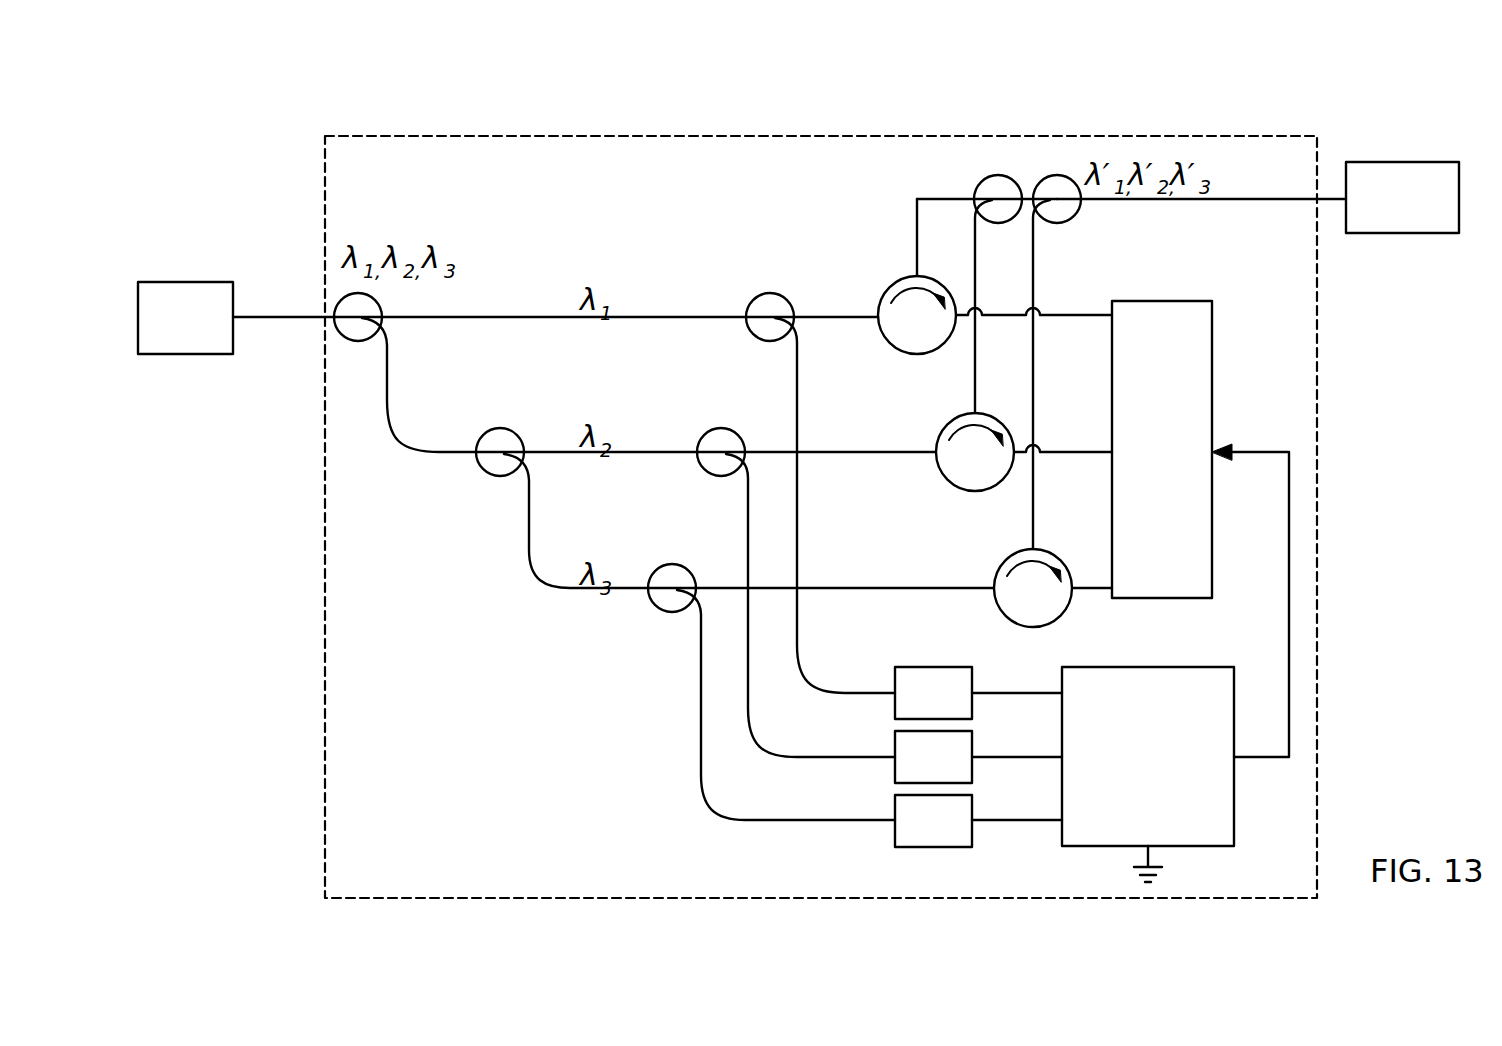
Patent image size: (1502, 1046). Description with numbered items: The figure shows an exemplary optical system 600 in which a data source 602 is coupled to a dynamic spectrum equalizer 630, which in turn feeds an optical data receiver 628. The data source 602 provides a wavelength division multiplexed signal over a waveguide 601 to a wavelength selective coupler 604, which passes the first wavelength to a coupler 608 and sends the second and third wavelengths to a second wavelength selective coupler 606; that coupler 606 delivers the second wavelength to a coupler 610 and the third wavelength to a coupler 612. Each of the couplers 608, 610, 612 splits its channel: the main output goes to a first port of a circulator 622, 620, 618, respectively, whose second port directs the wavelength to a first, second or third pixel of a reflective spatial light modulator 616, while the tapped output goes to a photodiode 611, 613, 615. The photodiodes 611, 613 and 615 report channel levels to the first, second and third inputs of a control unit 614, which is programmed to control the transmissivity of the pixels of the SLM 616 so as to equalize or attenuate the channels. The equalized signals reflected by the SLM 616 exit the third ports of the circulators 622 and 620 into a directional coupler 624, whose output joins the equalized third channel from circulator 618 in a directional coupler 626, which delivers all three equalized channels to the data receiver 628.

The optical system 600 is at (1336, 103).
The waveguide 601 is at (263, 316).
The data source 602 is at (199, 282).
The wavelength selective coupler 604 is at (378, 300).
The second wavelength selective coupler 606 is at (505, 428).
The coupler 608 is at (770, 293).
The coupler 610 is at (723, 428).
The photodiode 611 is at (966, 667).
The coupler 612 is at (675, 564).
The photodiode 613 is at (966, 731).
The control unit 614 is at (1180, 667).
The photodiode 615 is at (966, 795).
The reflective spatial light modulator 616 is at (1183, 300).
The circulator 618 is at (1003, 554).
The circulator 620 is at (950, 417).
The circulator 622 is at (890, 283).
The directional coupler 624 is at (980, 186).
The directional coupler 626 is at (1052, 175).
The optical data receiver 628 is at (1440, 162).
The dynamic spectrum equalizer 630 is at (753, 136).